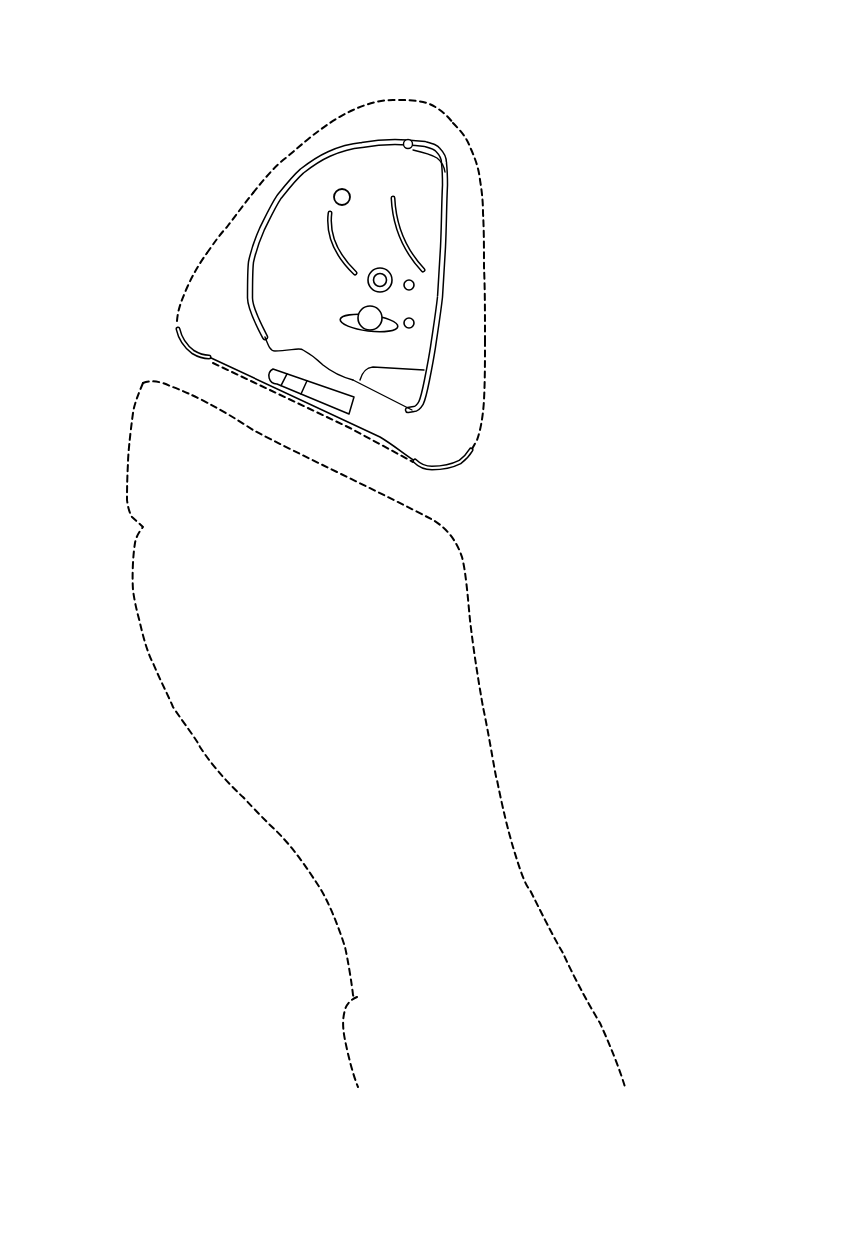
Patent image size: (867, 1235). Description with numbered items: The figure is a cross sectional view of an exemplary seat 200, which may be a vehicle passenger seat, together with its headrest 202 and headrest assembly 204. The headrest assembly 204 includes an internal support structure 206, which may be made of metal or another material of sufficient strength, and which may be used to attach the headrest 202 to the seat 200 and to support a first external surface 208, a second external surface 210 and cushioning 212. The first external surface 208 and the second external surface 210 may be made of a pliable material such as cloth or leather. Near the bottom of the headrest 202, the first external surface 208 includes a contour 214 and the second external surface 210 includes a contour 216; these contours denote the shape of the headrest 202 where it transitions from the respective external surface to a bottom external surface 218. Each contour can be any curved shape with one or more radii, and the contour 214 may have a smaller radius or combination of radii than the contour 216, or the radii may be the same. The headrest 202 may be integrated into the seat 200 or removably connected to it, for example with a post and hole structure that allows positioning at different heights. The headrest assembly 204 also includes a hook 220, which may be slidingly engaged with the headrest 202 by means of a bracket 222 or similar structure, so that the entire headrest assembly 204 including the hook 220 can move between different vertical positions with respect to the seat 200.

The seat 200 is at (470, 85).
The headrest 202 is at (157, 137).
The headrest assembly 204 is at (203, 263).
The internal support structure 206 is at (450, 248).
The first external surface 208 is at (487, 283).
The second external surface 210 is at (230, 225).
The cushioning 212 is at (460, 372).
The contour 214 is at (471, 451).
The contour 216 is at (177, 317).
The bottom external surface 218 is at (366, 436).
The hook 220 is at (207, 356).
The bracket 222 is at (327, 397).